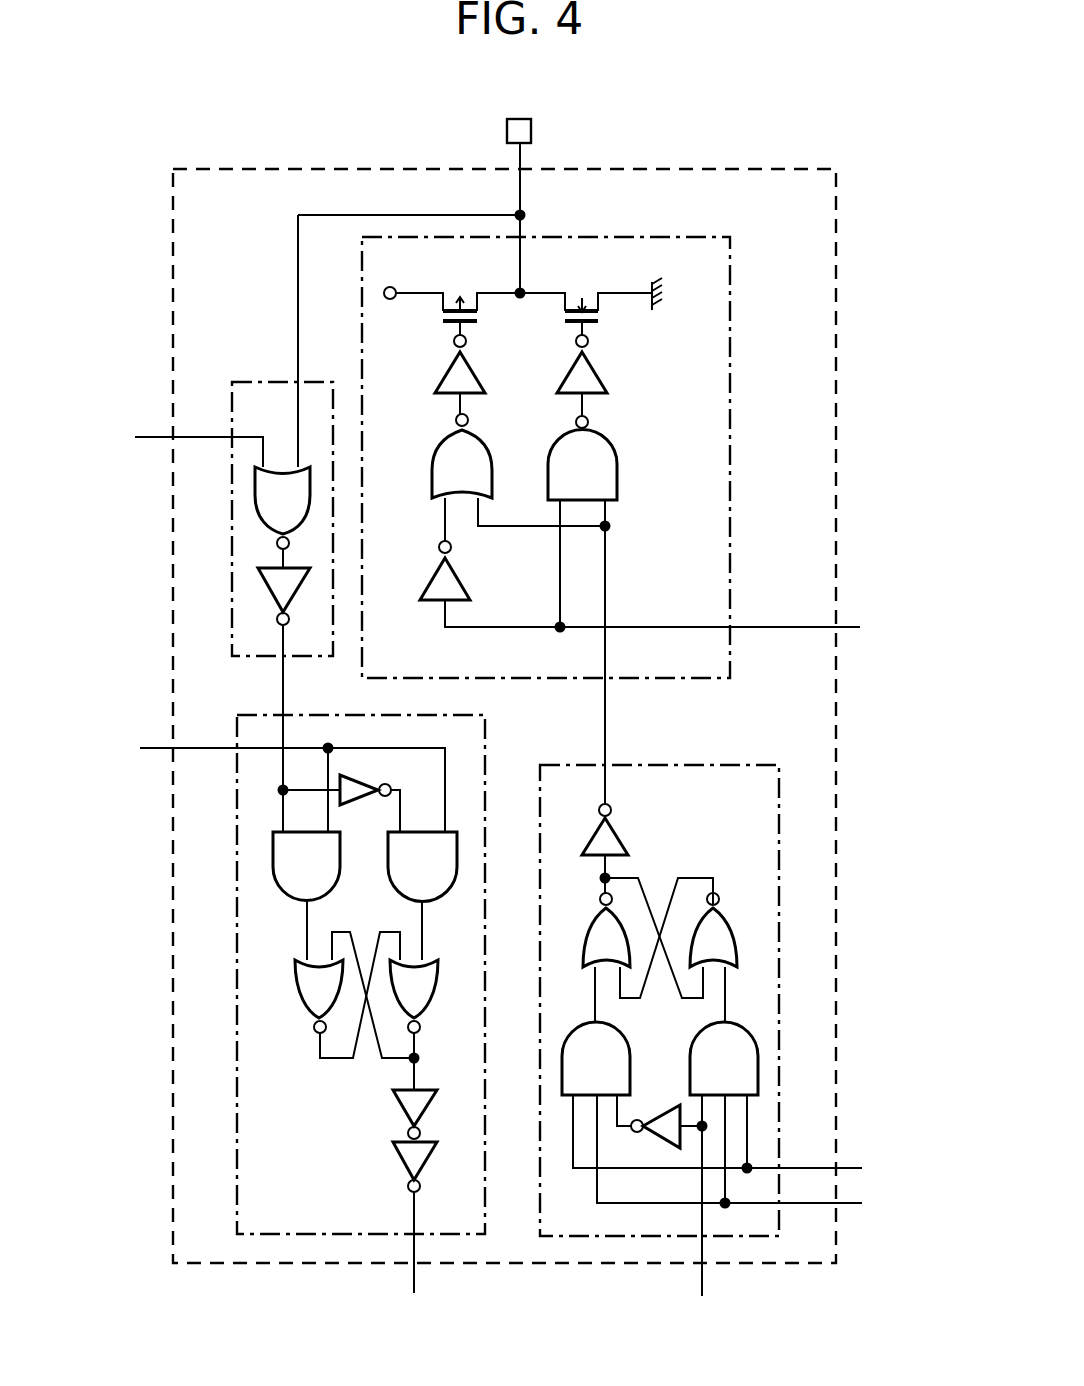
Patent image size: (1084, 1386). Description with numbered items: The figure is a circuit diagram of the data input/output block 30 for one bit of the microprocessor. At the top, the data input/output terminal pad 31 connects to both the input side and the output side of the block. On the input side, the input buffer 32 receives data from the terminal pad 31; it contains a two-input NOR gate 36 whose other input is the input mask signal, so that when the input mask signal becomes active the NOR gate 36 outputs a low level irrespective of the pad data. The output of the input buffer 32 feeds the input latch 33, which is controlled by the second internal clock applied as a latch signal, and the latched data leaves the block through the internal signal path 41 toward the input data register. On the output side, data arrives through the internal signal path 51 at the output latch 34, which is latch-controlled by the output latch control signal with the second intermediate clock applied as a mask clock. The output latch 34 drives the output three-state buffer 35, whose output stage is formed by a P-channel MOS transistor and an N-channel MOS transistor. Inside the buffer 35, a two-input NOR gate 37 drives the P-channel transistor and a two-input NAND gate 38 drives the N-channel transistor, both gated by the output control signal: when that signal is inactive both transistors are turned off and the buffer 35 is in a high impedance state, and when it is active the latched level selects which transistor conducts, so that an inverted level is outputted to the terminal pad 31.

The data input/output block 30 is at (838, 392).
The data input/output terminal pad 31 is at (532, 132).
The input buffer 32 is at (258, 382).
The input latch 33 is at (486, 762).
The output latch 34 is at (664, 765).
The output three-state buffer 35 is at (620, 237).
The 2-input NOR gate 36 is at (307, 505).
The 2-input NOR gate 37 is at (432, 462).
The 2-input NAND gate 38 is at (618, 460).
The internal signal path 41 is at (416, 1264).
The internal signal path 51 is at (704, 1215).